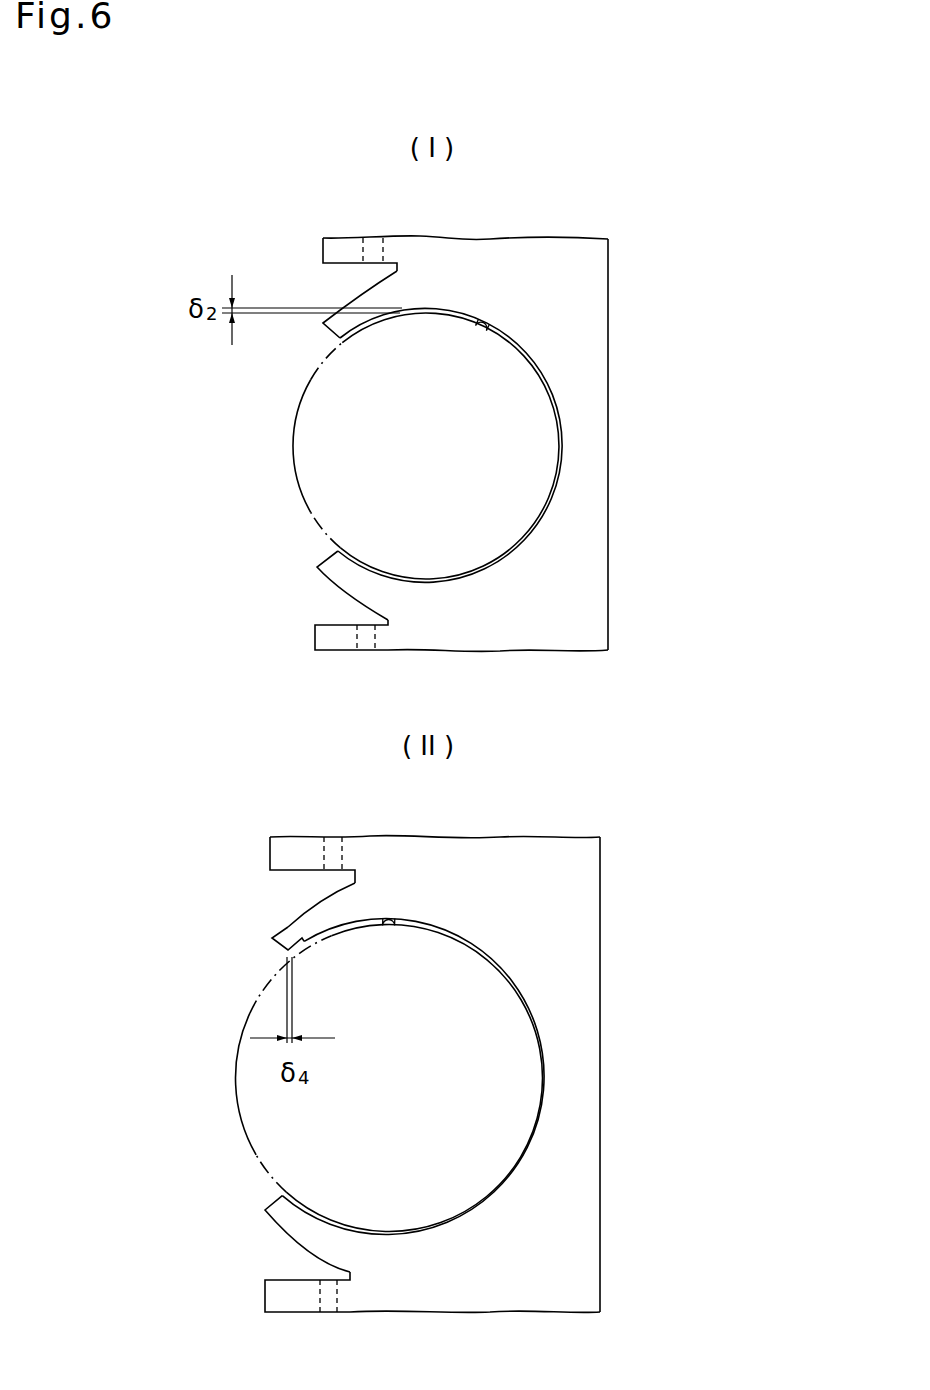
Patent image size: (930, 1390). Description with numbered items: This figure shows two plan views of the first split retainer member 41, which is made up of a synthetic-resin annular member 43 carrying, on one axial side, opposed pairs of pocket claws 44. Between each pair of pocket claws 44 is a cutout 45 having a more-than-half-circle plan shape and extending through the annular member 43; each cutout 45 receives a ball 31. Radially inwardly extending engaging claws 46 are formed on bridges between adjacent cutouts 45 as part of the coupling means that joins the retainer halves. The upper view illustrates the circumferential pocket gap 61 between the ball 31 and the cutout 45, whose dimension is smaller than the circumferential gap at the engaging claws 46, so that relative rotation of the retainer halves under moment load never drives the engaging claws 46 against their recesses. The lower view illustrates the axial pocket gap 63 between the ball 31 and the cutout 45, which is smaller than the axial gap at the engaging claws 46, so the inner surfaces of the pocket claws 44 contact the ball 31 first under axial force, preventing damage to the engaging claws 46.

The ball 31 is at (313, 411).
The first split retainer member 41 is at (612, 344).
The annular member 43 is at (598, 430).
The pocket claws 44 is at (353, 298).
The cutout 45 is at (488, 329).
The engaging claw 46 is at (320, 1295).
The circumferential pocket gap 61 is at (450, 309).
The axial pocket gap 63 is at (283, 930).